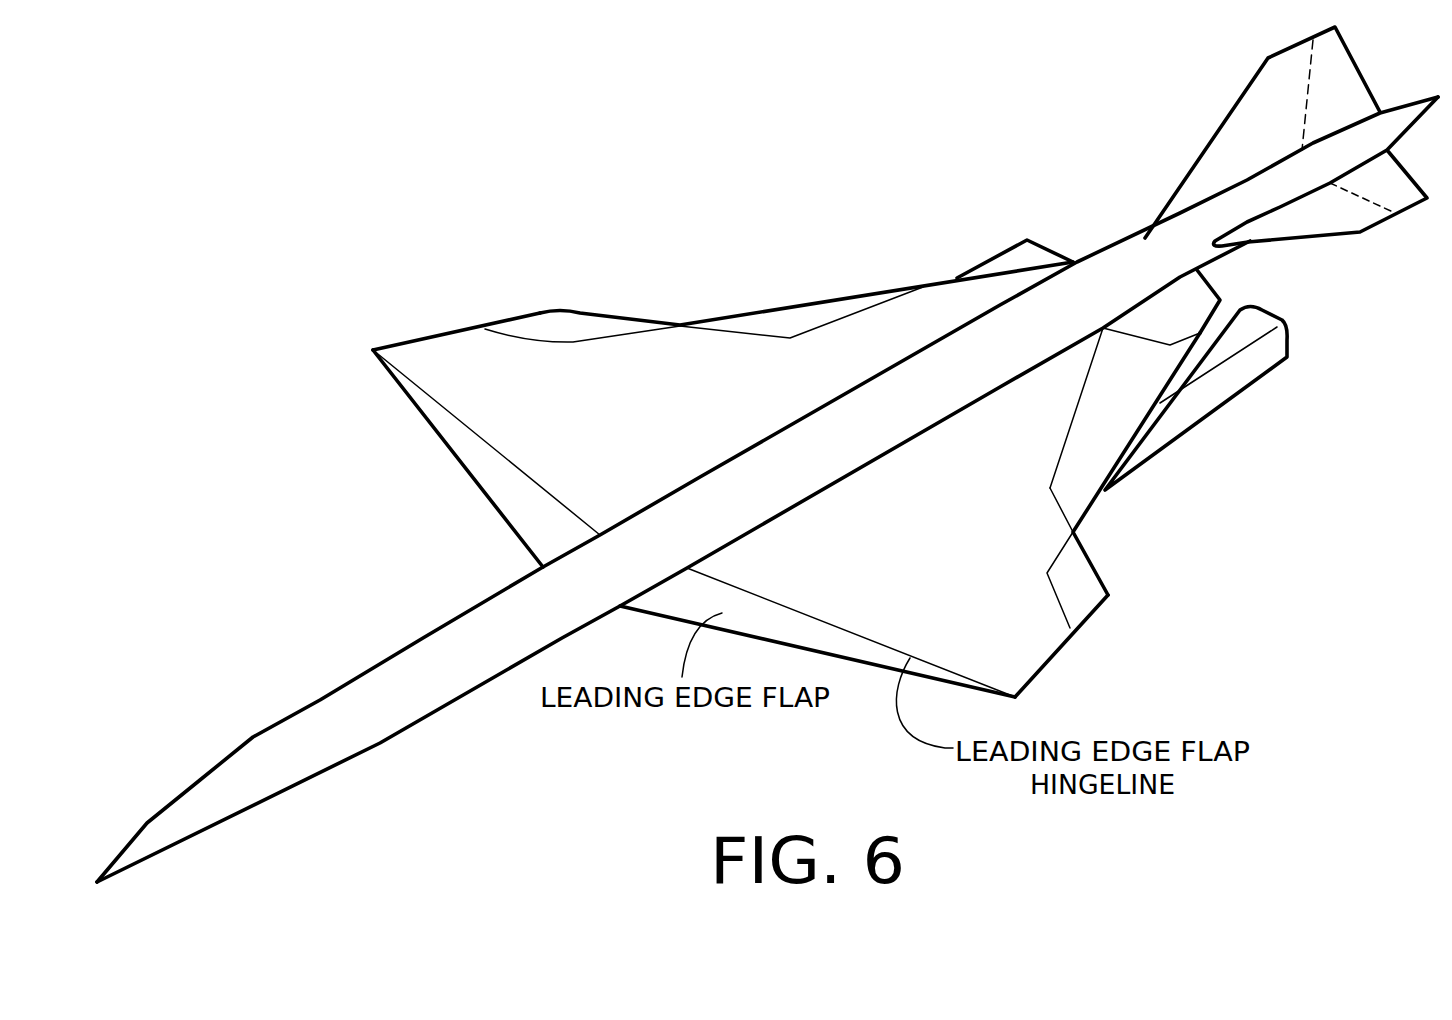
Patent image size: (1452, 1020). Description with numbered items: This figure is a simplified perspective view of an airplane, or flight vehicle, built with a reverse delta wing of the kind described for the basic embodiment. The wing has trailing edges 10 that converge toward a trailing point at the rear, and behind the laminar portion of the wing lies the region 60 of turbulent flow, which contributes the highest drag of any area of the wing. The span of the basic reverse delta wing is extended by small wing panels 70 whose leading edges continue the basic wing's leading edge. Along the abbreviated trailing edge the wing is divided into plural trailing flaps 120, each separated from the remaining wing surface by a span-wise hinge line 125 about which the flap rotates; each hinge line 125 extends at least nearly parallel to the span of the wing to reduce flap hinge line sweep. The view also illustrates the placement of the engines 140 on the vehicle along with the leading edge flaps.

The trailing edges 10 is at (875, 292).
The region of turbulent flow 60 is at (852, 371).
The wing panels 70 is at (443, 379).
The trailing flaps 120 is at (565, 325).
The hinge lines 125 is at (513, 333).
The engines 140 is at (1027, 242).